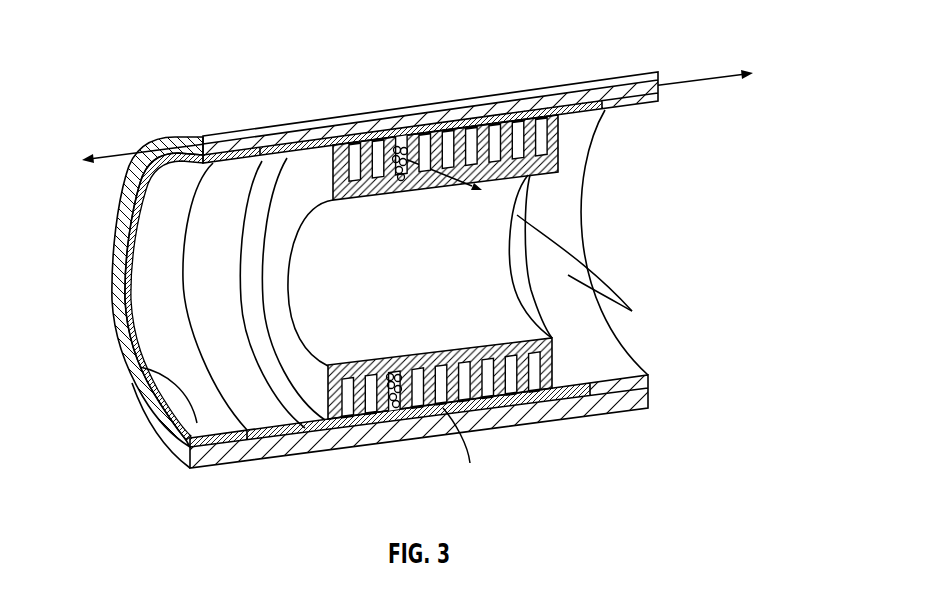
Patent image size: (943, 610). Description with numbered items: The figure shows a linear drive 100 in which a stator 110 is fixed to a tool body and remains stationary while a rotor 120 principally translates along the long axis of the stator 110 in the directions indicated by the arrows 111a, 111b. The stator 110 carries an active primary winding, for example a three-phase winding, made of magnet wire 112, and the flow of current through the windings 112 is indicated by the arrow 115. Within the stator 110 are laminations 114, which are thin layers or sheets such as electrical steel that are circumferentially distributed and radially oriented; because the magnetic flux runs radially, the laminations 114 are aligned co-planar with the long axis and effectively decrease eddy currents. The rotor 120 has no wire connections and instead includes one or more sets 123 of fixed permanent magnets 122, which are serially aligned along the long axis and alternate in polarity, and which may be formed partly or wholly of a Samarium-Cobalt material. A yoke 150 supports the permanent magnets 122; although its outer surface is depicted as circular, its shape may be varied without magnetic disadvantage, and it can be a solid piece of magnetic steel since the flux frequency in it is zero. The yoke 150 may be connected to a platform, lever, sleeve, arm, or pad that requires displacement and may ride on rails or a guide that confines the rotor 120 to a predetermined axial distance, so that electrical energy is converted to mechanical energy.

The linear drive 100 is at (114, 38).
The stator 110 is at (571, 137).
The arrow 111a is at (707, 78).
The arrow 111b is at (118, 155).
The magnet wire 112 is at (402, 146).
The laminations 114 is at (514, 140).
The arrow 115 is at (443, 139).
The rotor 120 is at (359, 136).
The permanent magnets 122 is at (140, 367).
The sets of fixed permanent magnets 123 is at (307, 455).
The yoke 150 is at (250, 140).